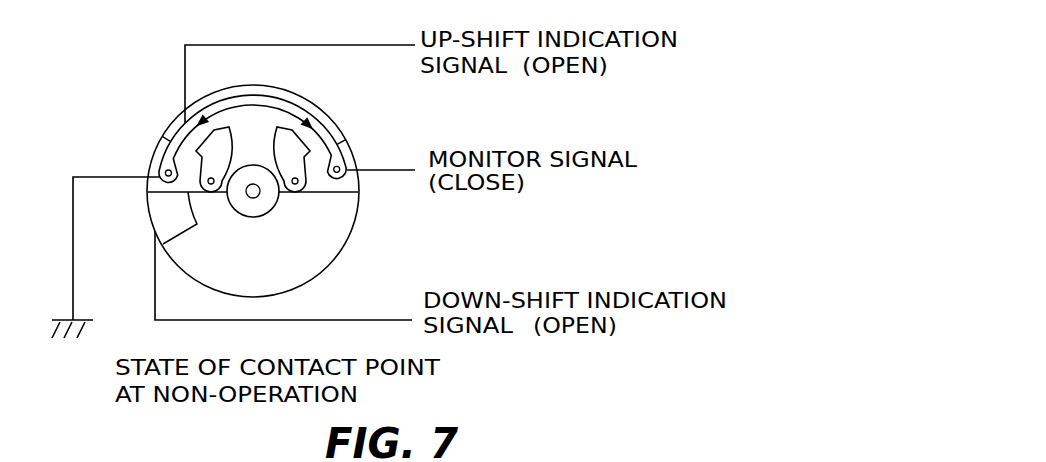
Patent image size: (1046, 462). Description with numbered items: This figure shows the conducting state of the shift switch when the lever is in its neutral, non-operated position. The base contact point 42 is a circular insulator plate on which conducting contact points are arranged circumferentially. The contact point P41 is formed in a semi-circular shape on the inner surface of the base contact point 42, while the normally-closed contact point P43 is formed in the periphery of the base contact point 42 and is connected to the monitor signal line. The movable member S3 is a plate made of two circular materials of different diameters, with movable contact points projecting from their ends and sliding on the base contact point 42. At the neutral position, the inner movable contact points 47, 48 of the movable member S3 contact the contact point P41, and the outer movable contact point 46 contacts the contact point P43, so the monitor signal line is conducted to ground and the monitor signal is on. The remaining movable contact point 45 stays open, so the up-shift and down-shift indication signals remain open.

The base contact point 42 is at (348, 243).
The contact point P43 is at (348, 150).
The movable member S3 is at (293, 110).
The movable contact point 45 is at (165, 172).
The movable contact point 46 is at (346, 191).
The movable contact point 47 is at (211, 192).
The movable contact point 48 is at (304, 192).
The contact point P41 is at (279, 212).